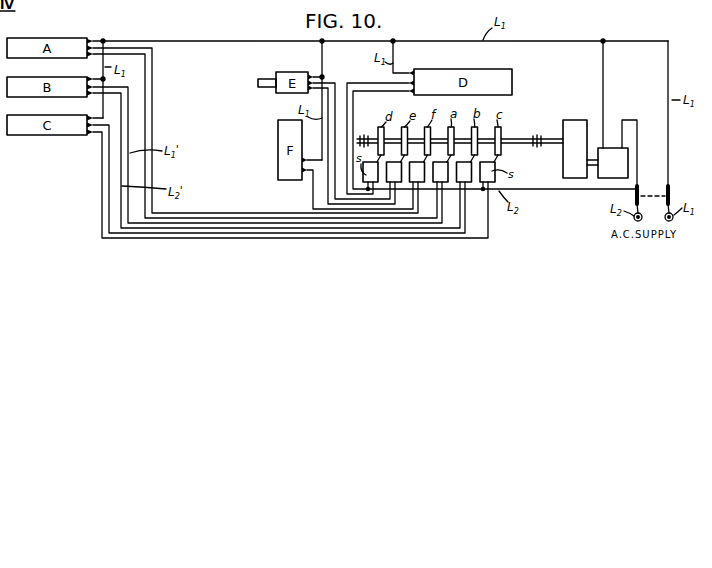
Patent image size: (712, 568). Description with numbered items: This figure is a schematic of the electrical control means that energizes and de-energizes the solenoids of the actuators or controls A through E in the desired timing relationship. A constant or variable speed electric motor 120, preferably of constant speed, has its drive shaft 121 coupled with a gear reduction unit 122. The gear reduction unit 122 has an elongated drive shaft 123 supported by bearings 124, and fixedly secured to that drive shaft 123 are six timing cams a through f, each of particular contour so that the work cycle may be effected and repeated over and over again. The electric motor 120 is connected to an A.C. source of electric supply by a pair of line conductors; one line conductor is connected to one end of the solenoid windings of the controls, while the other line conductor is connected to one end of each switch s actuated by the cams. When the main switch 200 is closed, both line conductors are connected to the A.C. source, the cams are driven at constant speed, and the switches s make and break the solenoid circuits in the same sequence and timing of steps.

The electric motor 120 is at (614, 137).
The drive shaft 121 is at (595, 147).
The gear reduction unit 122 is at (566, 120).
The elongated drive shaft 123 is at (553, 146).
The bearings 124 is at (362, 135).
The main switch 200 is at (671, 194).